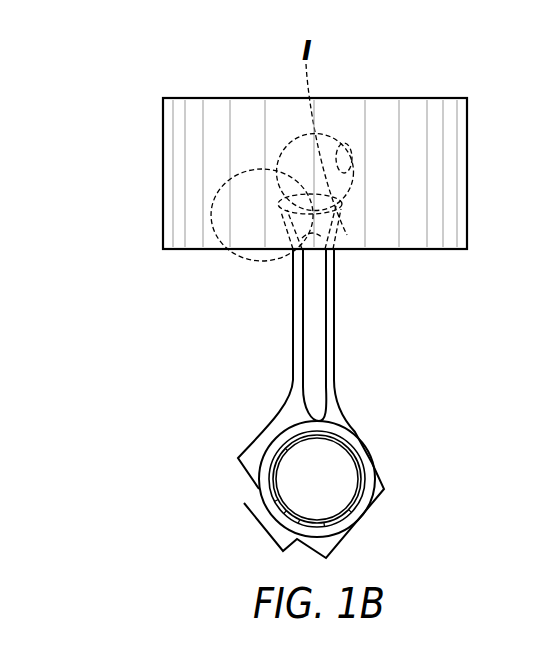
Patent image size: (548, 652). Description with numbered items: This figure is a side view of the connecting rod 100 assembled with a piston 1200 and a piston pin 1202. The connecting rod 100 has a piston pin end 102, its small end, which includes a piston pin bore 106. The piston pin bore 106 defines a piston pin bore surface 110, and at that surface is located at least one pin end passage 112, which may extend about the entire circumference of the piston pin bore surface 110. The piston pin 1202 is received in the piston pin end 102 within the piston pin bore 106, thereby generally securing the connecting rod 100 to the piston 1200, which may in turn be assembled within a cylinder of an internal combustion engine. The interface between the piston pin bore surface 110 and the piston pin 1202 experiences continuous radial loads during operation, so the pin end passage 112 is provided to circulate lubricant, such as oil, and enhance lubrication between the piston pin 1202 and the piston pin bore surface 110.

The connecting rod 100 is at (219, 483).
The piston pin end 102 is at (271, 213).
The piston pin bore 106 is at (372, 172).
The piston pin bore surface 110 is at (350, 143).
The pin end passage 112 is at (335, 215).
The piston 1200 is at (141, 181).
The piston pin 1202 is at (286, 160).